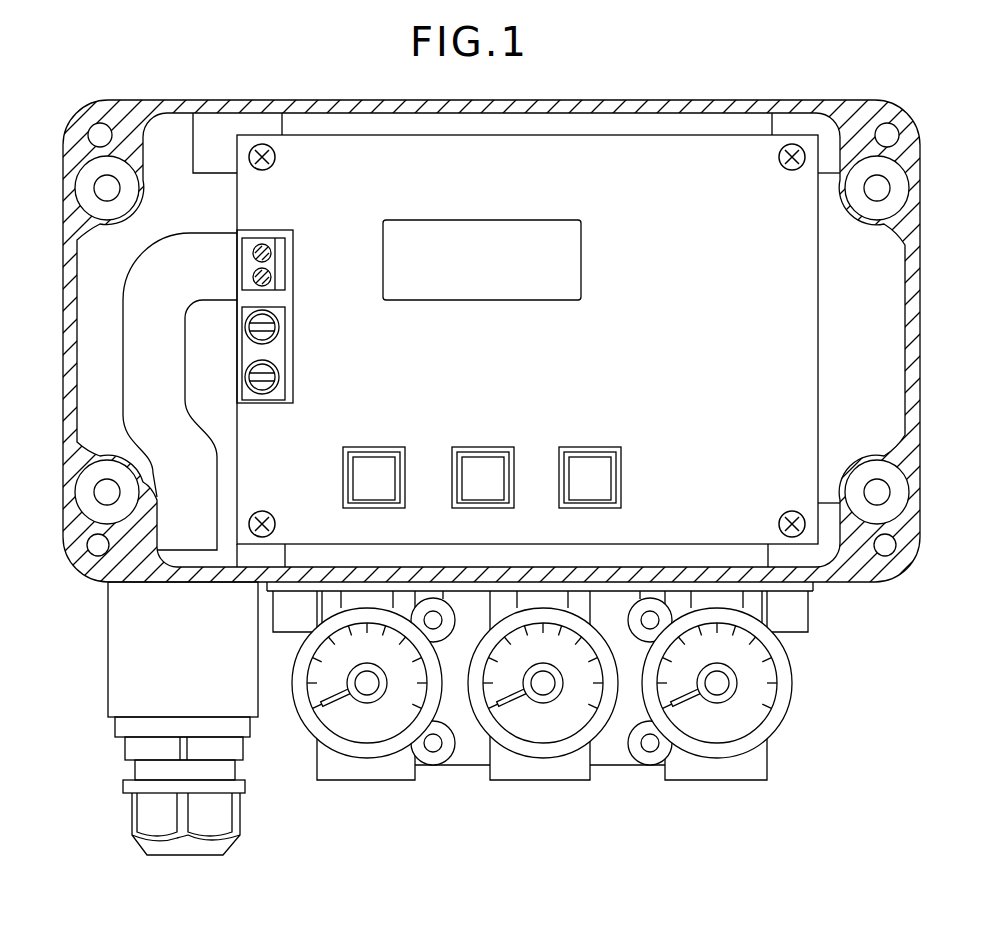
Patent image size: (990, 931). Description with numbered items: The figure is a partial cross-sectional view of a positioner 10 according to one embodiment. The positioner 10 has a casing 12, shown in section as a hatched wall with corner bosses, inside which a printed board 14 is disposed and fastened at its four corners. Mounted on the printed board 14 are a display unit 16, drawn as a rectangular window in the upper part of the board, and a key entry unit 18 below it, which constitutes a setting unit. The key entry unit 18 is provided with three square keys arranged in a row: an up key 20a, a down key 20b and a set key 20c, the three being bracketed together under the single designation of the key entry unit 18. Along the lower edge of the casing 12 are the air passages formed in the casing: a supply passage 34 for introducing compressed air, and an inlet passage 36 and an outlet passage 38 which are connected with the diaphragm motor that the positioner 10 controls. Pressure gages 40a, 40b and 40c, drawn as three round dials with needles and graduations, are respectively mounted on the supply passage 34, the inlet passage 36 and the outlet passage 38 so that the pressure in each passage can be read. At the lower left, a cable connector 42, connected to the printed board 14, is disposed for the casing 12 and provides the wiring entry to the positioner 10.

The positioner 10 is at (897, 80).
The casing 12 is at (633, 107).
The printed board 14 is at (703, 155).
The display unit 16 is at (472, 235).
The key entry unit 18 is at (620, 403).
The up key 20a is at (370, 470).
The down key 20b is at (479, 470).
The set key 20c is at (587, 470).
The supply passage 34 is at (540, 775).
The inlet passage 36 is at (363, 775).
The outlet passage 38 is at (712, 772).
The pressure gage 40a is at (380, 730).
The pressure gage 40b is at (562, 728).
The pressure gage 40c is at (733, 727).
The cable connector 42 is at (122, 616).